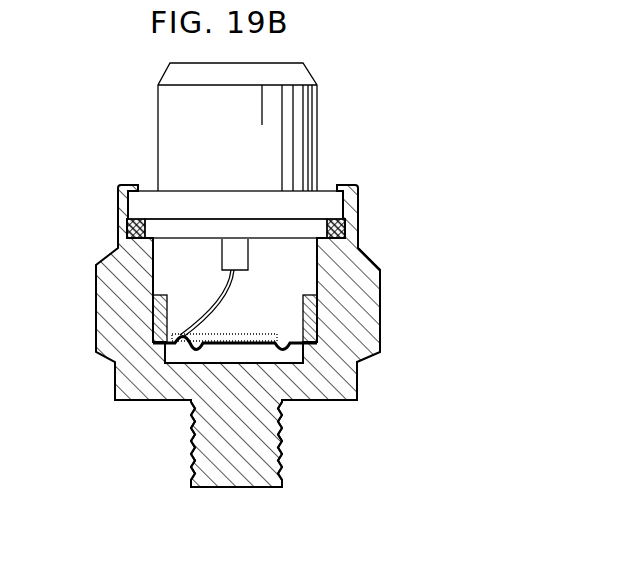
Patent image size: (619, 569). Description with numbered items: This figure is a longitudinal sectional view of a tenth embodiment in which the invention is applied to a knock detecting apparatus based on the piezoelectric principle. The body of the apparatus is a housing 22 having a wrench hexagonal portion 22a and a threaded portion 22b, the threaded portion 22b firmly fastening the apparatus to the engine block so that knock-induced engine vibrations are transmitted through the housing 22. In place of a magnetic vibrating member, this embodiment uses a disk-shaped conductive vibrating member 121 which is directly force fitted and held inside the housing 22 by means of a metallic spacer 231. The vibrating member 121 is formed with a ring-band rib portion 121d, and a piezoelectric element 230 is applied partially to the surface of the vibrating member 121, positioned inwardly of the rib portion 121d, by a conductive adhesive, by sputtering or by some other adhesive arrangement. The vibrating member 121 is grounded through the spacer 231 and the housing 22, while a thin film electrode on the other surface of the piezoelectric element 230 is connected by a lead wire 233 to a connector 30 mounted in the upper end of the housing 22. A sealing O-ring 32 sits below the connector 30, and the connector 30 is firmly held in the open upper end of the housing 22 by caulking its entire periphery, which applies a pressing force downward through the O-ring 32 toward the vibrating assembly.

The housing 22 is at (352, 388).
The wrench hexagonal portion 22a is at (372, 332).
The threaded portion 22b is at (272, 455).
The connector 30 is at (313, 123).
The sealing O-ring 32 is at (347, 227).
The piezoelectric element 230 is at (162, 328).
The metallic spacer 231 is at (203, 343).
The lead wire 233 is at (218, 282).
The vibrating member 121 is at (198, 350).
The ring-band rib portion 121d is at (192, 350).